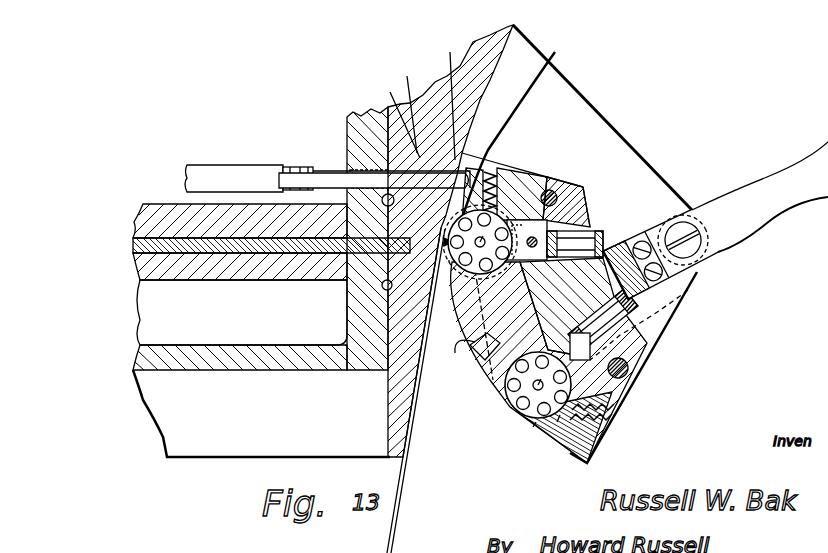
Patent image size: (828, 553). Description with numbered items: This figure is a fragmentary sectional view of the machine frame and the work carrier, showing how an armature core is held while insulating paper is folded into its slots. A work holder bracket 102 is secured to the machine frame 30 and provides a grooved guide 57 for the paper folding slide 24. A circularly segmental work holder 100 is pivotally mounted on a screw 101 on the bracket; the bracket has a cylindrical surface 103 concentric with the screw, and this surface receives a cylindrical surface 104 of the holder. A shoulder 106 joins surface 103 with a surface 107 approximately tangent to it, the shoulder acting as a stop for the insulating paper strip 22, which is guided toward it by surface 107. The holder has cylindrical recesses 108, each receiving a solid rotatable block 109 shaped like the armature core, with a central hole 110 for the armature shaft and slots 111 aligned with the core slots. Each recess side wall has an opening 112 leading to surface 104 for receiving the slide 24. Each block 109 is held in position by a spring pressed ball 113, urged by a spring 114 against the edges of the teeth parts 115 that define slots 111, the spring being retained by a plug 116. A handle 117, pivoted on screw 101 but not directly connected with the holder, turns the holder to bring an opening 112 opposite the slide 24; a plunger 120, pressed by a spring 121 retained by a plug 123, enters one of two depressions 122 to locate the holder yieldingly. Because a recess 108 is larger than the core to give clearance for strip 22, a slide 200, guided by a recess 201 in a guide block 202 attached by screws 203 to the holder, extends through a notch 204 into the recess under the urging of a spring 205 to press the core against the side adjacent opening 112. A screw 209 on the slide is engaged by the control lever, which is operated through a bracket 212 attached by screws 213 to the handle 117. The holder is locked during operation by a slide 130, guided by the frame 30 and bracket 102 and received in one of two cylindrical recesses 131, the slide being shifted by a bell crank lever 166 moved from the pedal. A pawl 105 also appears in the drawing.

The insulating paper strip 22 is at (412, 414).
The paper folding slide 24 is at (410, 237).
The machine frame 30 is at (355, 118).
The grooved guide 57 is at (330, 281).
The work holder 100 is at (660, 345).
The screw 101 is at (684, 228).
The work holder bracket 102 is at (432, 80).
The cylindrical surface 103 is at (487, 108).
The cylindrical surface 104 is at (480, 150).
The pawl 105 is at (452, 354).
The shoulder 106 is at (449, 240).
The surface 107 is at (410, 387).
The cylindrical recess 108 is at (548, 183).
The rotatable block 109 is at (570, 188).
The central hole 110 is at (507, 311).
The slots 111 is at (533, 427).
The opening 112 is at (449, 262).
The spring pressed ball 113 is at (557, 422).
The spring 114 is at (582, 428).
The teeth parts 115 is at (543, 432).
The plug 116 is at (608, 430).
The handle 117 is at (795, 165).
The plunger 120 is at (401, 108).
The spring 121 is at (394, 119).
The depressions 122 is at (462, 382).
The plug 123 is at (388, 157).
The slide 130 is at (330, 173).
The cylindrical recesses 131 is at (475, 162).
The bell crank lever 166 is at (245, 173).
The slide 200 is at (580, 210).
The recess 201 is at (595, 222).
The guide block 202 is at (588, 200).
The screws 203 is at (555, 192).
The notch 204 is at (527, 242).
The spring 205 is at (601, 235).
The screw 209 is at (529, 240).
The bracket 212 is at (672, 312).
The screws 213 is at (690, 287).